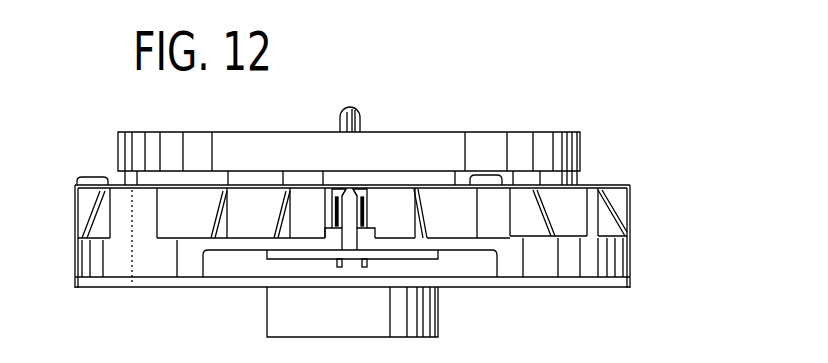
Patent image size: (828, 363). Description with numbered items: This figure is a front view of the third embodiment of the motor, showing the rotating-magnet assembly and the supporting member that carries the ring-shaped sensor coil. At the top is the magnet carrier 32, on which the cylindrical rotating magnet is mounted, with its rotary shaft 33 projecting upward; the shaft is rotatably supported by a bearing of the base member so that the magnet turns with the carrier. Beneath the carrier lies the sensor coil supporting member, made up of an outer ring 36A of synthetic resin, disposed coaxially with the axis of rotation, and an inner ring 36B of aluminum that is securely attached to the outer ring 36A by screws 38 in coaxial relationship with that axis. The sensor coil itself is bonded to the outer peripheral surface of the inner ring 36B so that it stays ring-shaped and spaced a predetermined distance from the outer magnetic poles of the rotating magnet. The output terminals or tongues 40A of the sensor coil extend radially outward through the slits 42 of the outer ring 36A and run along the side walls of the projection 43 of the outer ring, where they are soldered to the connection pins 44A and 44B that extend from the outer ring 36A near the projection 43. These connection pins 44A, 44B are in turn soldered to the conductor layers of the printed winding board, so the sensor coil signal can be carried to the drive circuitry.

The magnet carrier 32 is at (477, 140).
The rotary shaft 33 is at (351, 107).
The outer ring 36A is at (608, 248).
The inner ring 36B is at (610, 184).
The screws 38 is at (95, 177).
The output terminals or tongues 40A is at (340, 186).
The slits 42 is at (350, 189).
The projection 43 is at (350, 214).
The connection pin 44A is at (333, 218).
The connection pin 44B is at (367, 218).